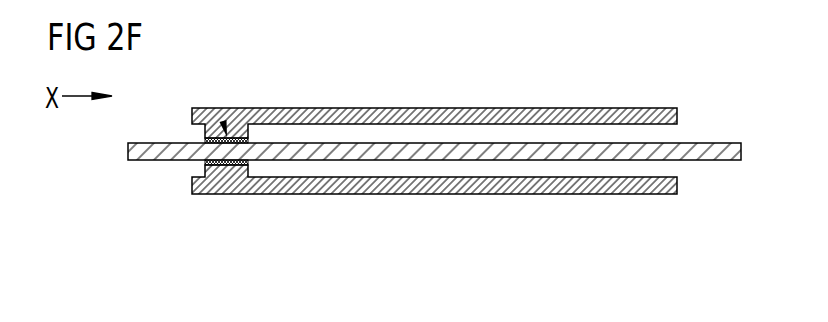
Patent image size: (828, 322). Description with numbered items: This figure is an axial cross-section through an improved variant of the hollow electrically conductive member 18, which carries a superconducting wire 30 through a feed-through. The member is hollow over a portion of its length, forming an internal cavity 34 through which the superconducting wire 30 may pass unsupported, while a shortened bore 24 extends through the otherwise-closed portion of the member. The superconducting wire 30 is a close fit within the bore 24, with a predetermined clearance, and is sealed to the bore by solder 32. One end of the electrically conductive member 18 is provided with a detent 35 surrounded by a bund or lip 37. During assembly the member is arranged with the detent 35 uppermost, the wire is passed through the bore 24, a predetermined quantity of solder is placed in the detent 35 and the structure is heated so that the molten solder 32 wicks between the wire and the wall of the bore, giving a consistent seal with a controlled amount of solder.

The electrically conductive member 18 is at (652, 117).
The bore 24 is at (222, 124).
The superconducting wire 30 is at (722, 153).
The solder 32 is at (235, 165).
The internal cavity 34 is at (665, 132).
The detent 35 is at (195, 168).
The bund or lip 37 is at (192, 190).